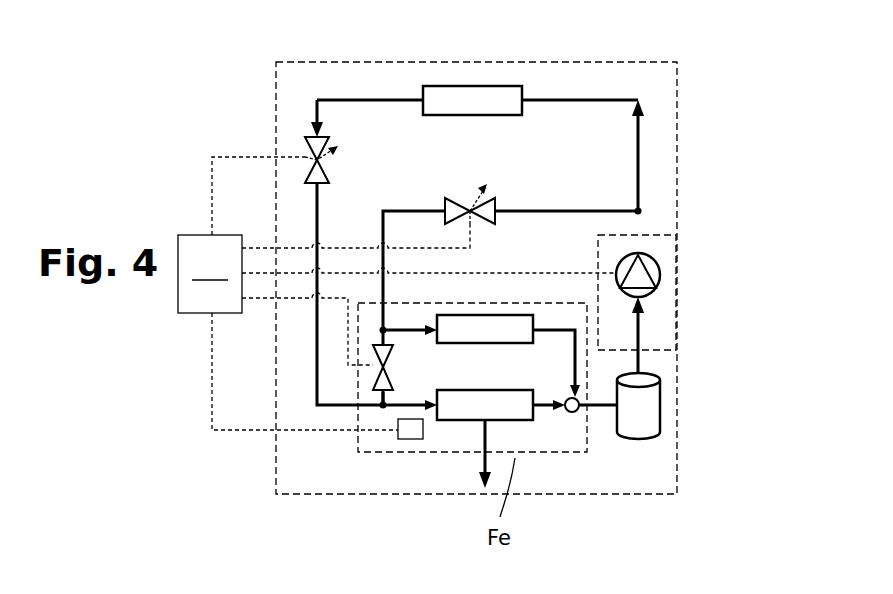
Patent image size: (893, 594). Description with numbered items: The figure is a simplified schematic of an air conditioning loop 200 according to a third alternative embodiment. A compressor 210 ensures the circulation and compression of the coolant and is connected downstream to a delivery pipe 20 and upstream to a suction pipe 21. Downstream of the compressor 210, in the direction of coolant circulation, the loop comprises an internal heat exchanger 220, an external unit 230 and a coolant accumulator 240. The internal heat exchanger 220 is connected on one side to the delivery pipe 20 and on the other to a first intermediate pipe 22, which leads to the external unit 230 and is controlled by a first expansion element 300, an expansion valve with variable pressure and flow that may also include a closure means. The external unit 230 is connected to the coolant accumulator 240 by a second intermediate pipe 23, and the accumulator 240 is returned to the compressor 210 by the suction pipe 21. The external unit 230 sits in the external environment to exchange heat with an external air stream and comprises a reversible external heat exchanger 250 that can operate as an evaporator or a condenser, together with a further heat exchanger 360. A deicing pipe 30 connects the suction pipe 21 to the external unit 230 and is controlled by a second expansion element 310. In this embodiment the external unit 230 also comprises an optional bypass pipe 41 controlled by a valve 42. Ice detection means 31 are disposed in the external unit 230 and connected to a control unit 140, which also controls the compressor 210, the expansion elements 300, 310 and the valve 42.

The air conditioning loop 200 is at (712, 120).
The compressor 210 is at (660, 258).
The internal heat exchanger 220 is at (497, 97).
The external unit 230 is at (372, 452).
The coolant accumulator 240 is at (645, 408).
The external heat exchanger 250 is at (520, 405).
The electric heater 360 is at (475, 343).
The first expansion element 300 is at (308, 150).
The second expansion element 310 is at (462, 205).
The control unit 140 is at (397, 293).
The delivery pipe 20 is at (640, 222).
The suction pipe 21 is at (640, 333).
The first intermediate pipe 22 is at (315, 372).
The second intermediate pipe 23 is at (603, 405).
The deicing pipe 30 is at (390, 208).
The ice detection means 31 is at (410, 440).
The bypass pipe 41 is at (373, 395).
The valve 42 is at (393, 365).